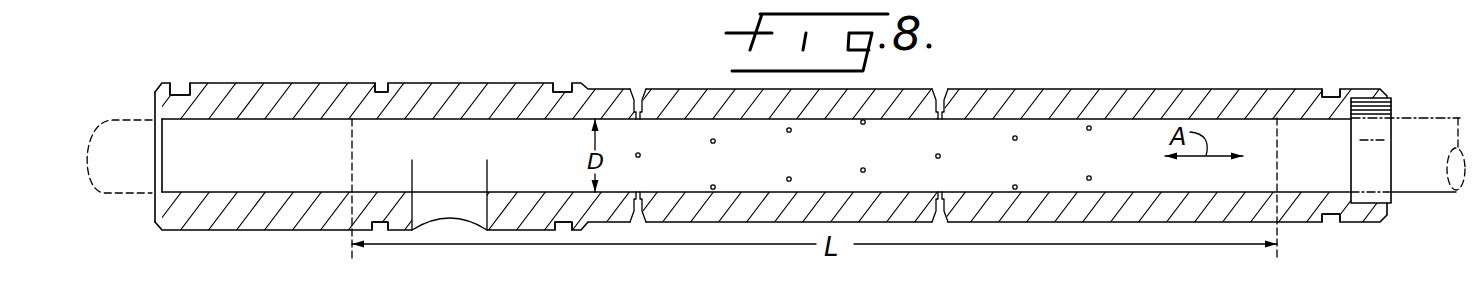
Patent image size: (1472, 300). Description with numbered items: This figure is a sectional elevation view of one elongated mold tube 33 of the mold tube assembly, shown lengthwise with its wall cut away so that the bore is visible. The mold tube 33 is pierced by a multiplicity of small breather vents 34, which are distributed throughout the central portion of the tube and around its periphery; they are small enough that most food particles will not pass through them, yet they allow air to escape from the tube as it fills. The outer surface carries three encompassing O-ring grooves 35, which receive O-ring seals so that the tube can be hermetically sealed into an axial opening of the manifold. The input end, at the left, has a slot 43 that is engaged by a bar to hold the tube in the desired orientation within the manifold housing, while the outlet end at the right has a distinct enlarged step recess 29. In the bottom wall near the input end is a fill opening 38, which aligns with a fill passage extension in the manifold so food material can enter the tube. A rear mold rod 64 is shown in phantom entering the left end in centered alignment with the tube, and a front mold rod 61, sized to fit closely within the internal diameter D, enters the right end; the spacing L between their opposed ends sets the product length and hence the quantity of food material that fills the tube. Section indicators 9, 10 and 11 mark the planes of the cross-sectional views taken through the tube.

The enlarged step recess 29 is at (1377, 203).
The mold tube 33 is at (1083, 89).
The breather vents 34 is at (933, 121).
The O-ring grooves 35 is at (380, 83).
The fill opening 38 is at (467, 205).
The slot 43 is at (181, 90).
The front mold rod 61 is at (1458, 118).
The rear mold rod 64 is at (118, 122).
The section line 9- 9 is at (167, 268).
The section line 10- 10 is at (651, 273).
The section line 11- 11 is at (1366, 262).